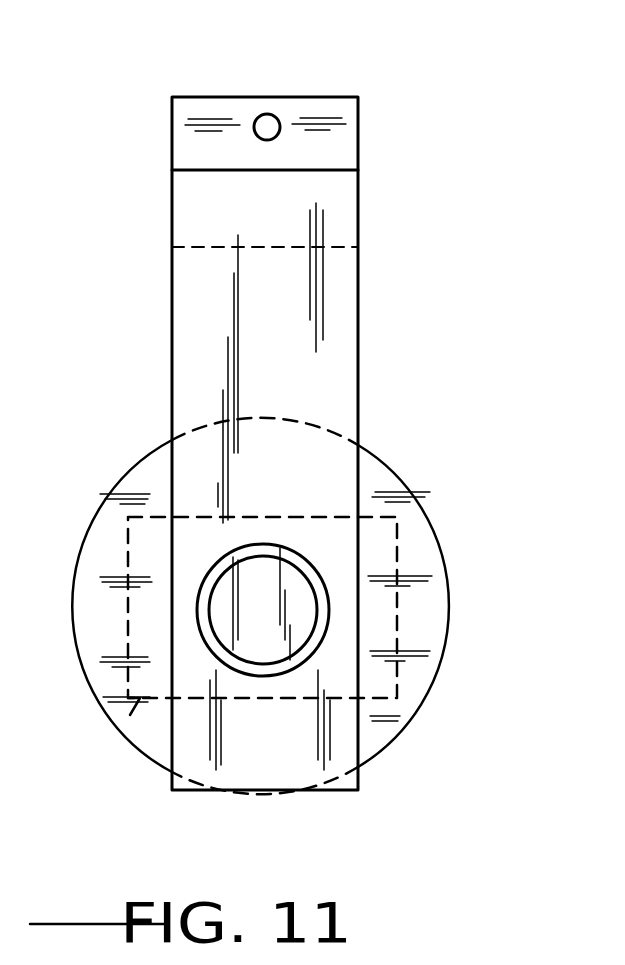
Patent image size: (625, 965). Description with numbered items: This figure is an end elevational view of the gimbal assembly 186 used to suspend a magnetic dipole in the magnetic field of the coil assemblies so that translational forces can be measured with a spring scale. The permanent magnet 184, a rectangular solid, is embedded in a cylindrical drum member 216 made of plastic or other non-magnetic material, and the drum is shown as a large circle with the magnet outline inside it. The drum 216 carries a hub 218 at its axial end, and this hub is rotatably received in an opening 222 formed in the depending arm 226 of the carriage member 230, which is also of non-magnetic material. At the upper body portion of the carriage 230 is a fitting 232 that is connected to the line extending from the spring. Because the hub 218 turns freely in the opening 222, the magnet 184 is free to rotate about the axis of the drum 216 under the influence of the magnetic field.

The gimbal assembly 186 is at (447, 126).
The fitting 232 is at (185, 108).
The carriage member 230 is at (201, 201).
The depending arm 226 is at (198, 343).
The cylindrical drum member 216 is at (142, 462).
The permanent magnet 184 is at (135, 711).
The hub 218 is at (222, 642).
The opening 222 is at (257, 667).